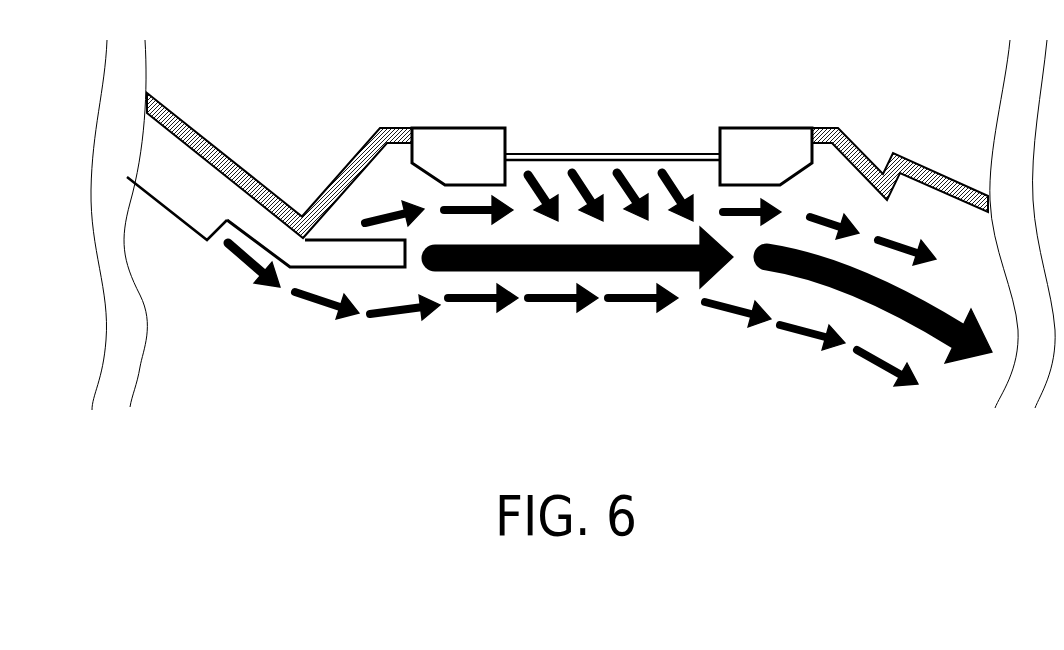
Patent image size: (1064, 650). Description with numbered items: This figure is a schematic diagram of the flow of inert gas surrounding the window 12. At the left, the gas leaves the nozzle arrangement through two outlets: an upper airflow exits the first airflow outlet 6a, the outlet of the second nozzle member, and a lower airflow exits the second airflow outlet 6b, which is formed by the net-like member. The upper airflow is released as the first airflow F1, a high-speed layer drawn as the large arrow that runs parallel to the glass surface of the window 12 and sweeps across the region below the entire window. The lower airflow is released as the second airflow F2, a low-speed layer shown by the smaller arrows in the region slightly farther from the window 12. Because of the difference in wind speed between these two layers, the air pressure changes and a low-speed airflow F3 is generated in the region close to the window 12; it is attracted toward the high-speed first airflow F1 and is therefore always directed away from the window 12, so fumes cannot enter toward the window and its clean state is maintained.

The first airflow outlet 6a is at (430, 262).
The second airflow outlet 6b is at (212, 243).
The window 12 is at (688, 150).
The first airflow F1 is at (527, 245).
The second airflow F2 is at (263, 283).
The airflow F3 is at (473, 205).